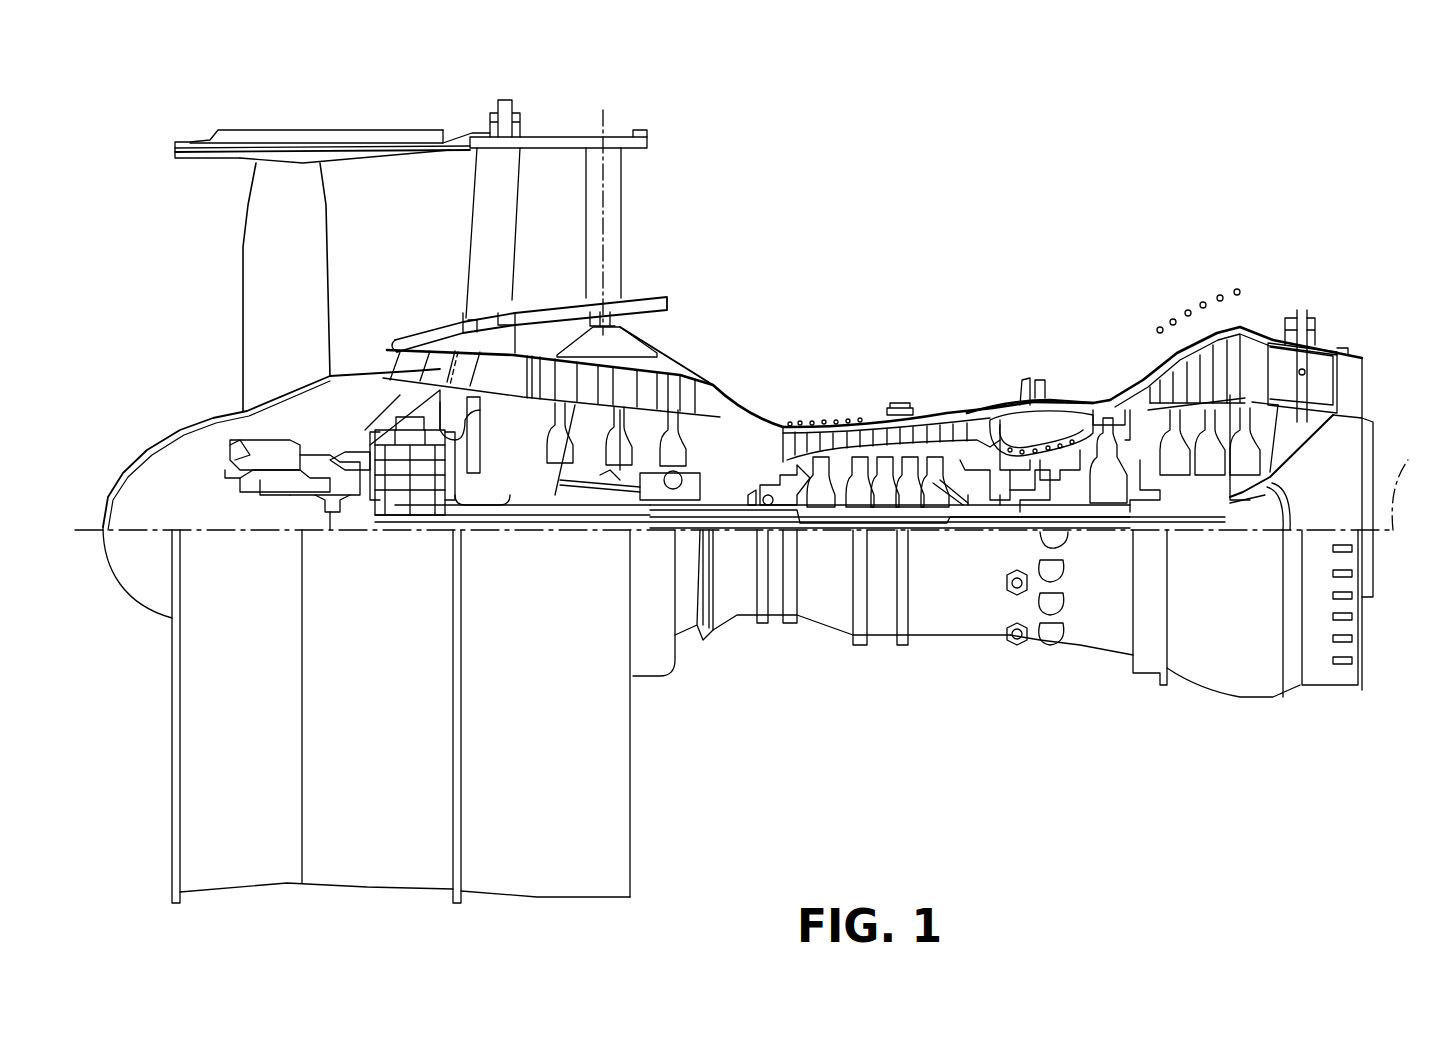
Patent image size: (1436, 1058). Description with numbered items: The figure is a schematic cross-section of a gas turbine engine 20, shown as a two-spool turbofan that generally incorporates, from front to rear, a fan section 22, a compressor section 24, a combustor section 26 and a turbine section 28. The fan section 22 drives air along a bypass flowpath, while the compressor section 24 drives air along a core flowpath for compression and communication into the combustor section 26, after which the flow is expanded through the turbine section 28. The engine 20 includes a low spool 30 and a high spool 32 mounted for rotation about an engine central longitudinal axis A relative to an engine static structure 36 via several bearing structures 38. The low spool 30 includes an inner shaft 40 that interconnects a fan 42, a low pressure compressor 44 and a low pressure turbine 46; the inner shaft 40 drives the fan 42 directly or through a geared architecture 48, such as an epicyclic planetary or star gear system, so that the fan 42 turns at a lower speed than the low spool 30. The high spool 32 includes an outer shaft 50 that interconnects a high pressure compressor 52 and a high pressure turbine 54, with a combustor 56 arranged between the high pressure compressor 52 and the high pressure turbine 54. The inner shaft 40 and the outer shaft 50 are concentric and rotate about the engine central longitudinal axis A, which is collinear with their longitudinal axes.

The gas turbine engine 20 is at (1104, 199).
The fan section 22 is at (170, 107).
The compressor section 24 is at (915, 265).
The combustor section 26 is at (915, 265).
The turbine section 28 is at (1040, 265).
The low spool 30 is at (720, 482).
The high spool 32 is at (943, 478).
The engine static structure 36 is at (882, 645).
The bearing structures 38 is at (213, 600).
The inner shaft 40 is at (1076, 512).
The fan 42 is at (300, 309).
The low pressure compressor 44 is at (668, 375).
The low pressure turbine 46 is at (1214, 363).
The geared architecture 48 is at (418, 483).
The outer shaft 50 is at (1075, 497).
The high pressure compressor 52 is at (806, 445).
The high pressure turbine 54 is at (1110, 428).
The combustor 56 is at (1043, 434).
The engine central longitudinal axis A is at (751, 490).